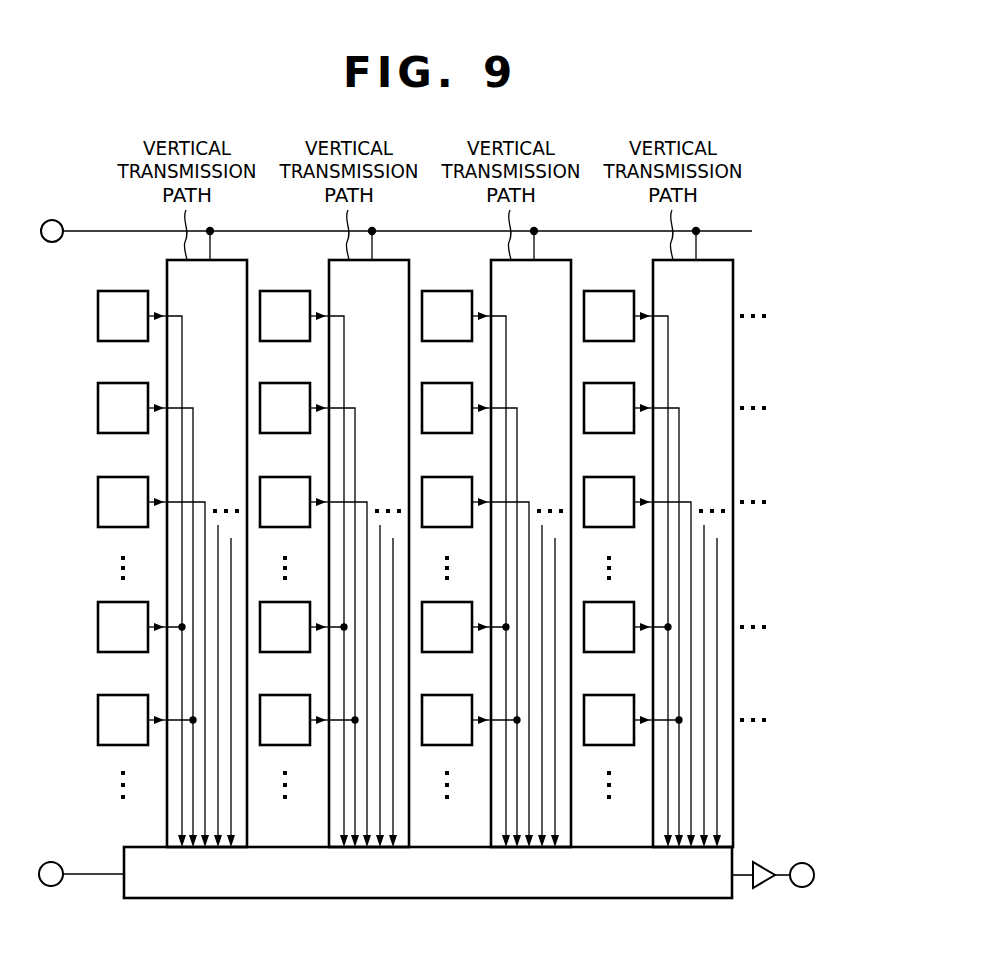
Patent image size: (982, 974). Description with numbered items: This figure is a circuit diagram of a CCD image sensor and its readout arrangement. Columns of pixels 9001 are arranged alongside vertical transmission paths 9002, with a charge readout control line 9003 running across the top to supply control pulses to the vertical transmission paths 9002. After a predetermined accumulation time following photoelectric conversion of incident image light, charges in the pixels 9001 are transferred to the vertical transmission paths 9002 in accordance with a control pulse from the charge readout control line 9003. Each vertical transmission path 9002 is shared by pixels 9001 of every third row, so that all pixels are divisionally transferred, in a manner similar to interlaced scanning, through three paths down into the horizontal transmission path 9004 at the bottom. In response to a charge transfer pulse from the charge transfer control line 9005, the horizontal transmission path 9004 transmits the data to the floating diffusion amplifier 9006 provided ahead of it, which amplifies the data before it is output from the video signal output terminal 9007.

The pixels 9001 is at (110, 340).
The vertical transmission paths 9002 is at (167, 817).
The charge readout control line 9003 is at (54, 243).
The horizontal transmission path 9004 is at (248, 899).
The charge transfer control line 9005 is at (52, 886).
The floating diffusion amplifier 9006 is at (761, 859).
The video signal output terminal 9007 is at (803, 887).